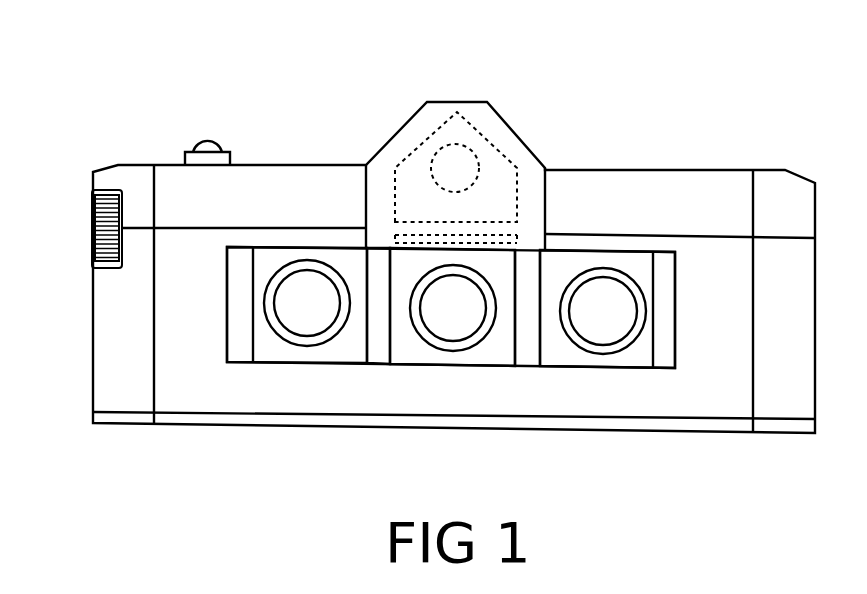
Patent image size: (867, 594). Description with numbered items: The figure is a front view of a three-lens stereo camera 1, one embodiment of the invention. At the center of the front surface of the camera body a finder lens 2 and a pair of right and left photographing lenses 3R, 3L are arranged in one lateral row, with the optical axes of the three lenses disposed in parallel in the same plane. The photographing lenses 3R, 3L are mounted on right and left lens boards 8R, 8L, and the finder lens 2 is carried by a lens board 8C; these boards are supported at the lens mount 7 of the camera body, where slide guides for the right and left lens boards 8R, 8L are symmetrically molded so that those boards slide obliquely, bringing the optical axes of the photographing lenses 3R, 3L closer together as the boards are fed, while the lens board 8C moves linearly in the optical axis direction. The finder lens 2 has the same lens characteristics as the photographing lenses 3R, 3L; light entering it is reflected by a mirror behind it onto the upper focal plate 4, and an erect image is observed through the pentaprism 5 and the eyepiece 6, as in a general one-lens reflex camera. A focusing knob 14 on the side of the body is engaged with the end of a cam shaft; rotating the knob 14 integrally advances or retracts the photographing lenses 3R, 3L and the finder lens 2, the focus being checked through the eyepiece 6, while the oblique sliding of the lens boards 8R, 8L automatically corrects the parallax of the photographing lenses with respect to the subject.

The three-lens stereo camera 1 is at (302, 142).
The focusing knob 14 is at (93, 220).
The eyepiece 6 is at (468, 145).
The pentaprism 5 is at (493, 152).
The focal plate 4 is at (517, 235).
The lens mount 7 is at (382, 353).
The finder lens 2 is at (453, 328).
The lens board 8C is at (497, 355).
The right photographing lens 3R is at (305, 325).
The right lens board 8R is at (268, 353).
The left photographing lens 3L is at (600, 332).
The left lens board 8L is at (637, 357).